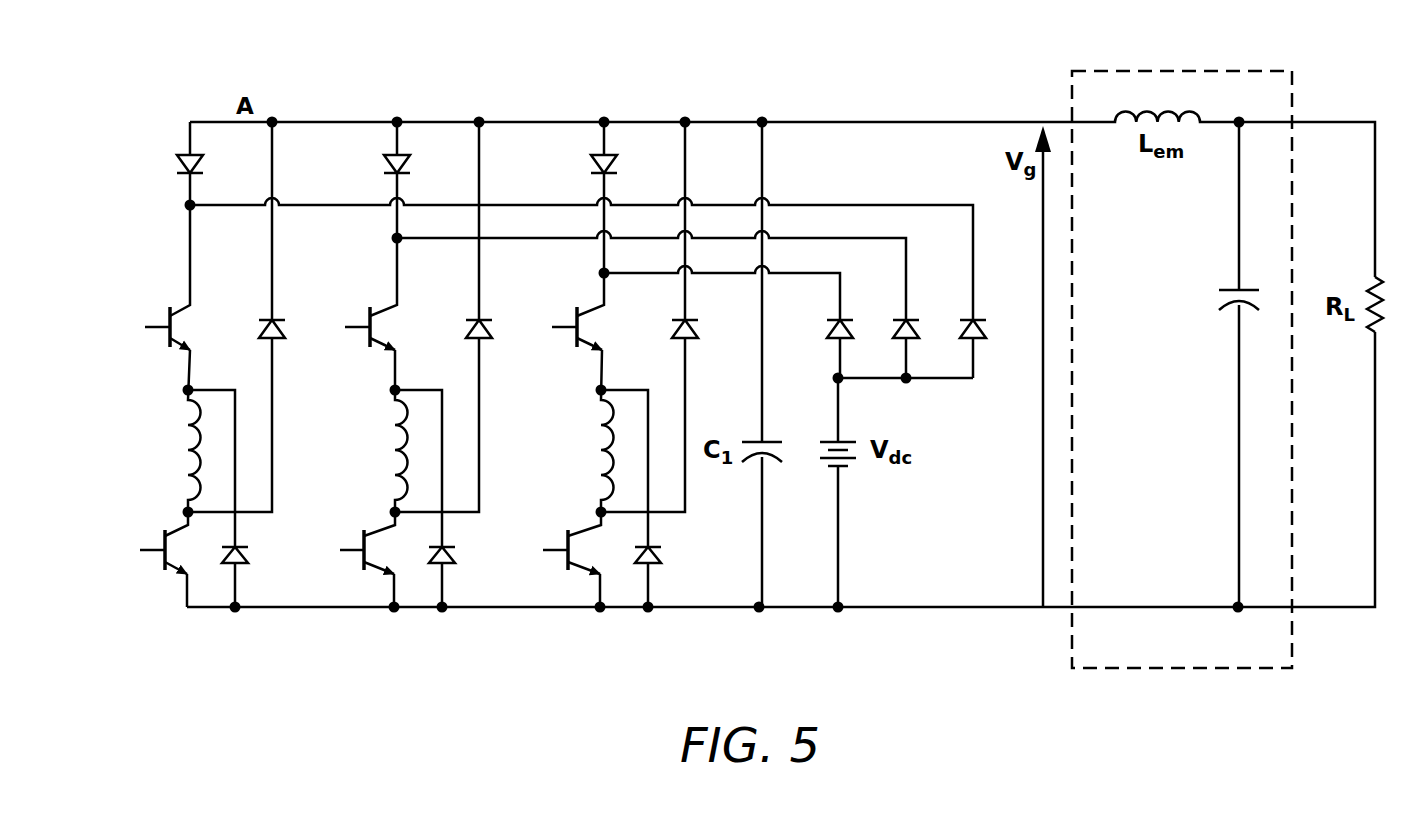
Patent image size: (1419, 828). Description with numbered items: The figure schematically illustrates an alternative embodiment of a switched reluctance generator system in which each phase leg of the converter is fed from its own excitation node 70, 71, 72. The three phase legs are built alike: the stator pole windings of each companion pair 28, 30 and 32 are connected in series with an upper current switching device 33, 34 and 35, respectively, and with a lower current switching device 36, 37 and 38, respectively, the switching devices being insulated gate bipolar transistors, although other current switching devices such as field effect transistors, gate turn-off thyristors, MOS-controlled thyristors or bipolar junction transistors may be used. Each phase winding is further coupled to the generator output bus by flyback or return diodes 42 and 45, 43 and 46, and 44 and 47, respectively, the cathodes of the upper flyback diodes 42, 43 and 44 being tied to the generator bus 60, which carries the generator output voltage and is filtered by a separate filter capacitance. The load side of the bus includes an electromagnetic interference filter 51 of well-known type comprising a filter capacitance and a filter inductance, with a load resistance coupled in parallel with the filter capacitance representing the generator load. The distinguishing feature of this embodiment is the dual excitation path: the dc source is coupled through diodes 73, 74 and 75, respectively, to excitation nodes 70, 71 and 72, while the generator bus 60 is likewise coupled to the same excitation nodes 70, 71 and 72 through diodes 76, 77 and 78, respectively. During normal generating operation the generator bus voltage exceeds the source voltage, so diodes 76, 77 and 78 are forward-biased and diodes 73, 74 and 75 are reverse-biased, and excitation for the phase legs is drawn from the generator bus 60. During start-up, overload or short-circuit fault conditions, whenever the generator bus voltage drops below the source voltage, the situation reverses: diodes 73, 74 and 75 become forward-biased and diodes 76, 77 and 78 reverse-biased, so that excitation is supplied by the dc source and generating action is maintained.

The companion pair of stator pole windings 28 is at (184, 455).
The companion pair of stator pole windings 30 is at (394, 457).
The companion pair of stator pole windings 32 is at (600, 457).
The upper current switching device 33 is at (168, 313).
The upper current switching device 34 is at (376, 313).
The upper current switching device 35 is at (577, 345).
The lower current switching device 36 is at (164, 564).
The lower current switching device 37 is at (365, 566).
The lower current switching device 38 is at (569, 566).
The flyback diode 42 is at (278, 340).
The flyback diode 43 is at (485, 340).
The flyback diode 44 is at (695, 330).
The flyback diode 45 is at (245, 556).
The flyback diode 46 is at (452, 556).
The flyback diode 47 is at (658, 552).
The electromagnetic interference filter 51 is at (1140, 71).
The generator bus 60 is at (850, 123).
The excitation node 70 is at (195, 212).
The excitation node 71 is at (400, 245).
The excitation node 72 is at (596, 278).
The diode 73 is at (958, 337).
The diode 74 is at (890, 337).
The diode 75 is at (828, 337).
The diode 76 is at (183, 159).
The diode 77 is at (383, 167).
The diode 78 is at (586, 167).